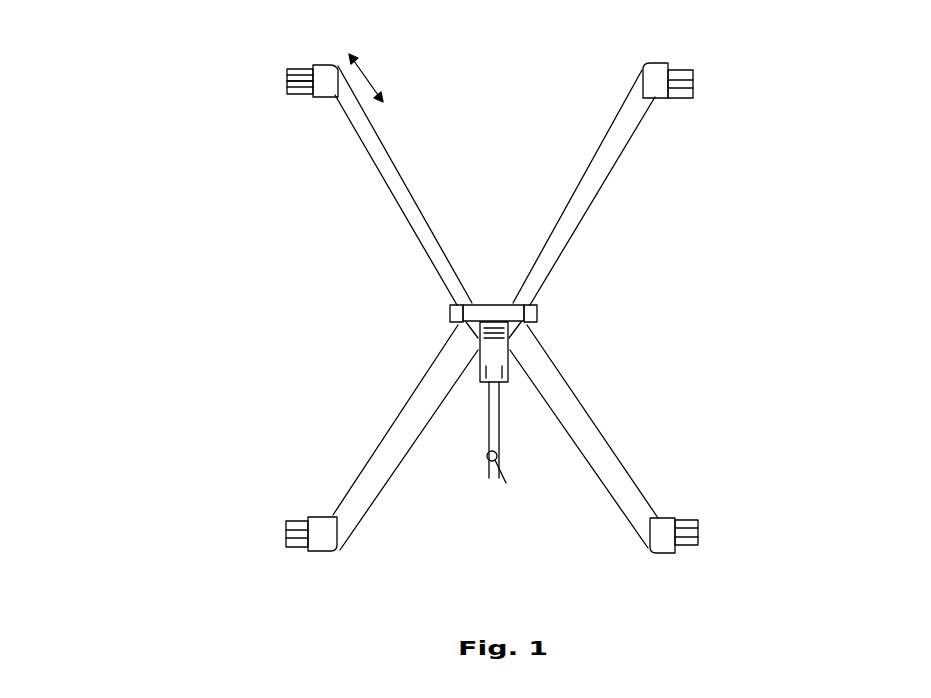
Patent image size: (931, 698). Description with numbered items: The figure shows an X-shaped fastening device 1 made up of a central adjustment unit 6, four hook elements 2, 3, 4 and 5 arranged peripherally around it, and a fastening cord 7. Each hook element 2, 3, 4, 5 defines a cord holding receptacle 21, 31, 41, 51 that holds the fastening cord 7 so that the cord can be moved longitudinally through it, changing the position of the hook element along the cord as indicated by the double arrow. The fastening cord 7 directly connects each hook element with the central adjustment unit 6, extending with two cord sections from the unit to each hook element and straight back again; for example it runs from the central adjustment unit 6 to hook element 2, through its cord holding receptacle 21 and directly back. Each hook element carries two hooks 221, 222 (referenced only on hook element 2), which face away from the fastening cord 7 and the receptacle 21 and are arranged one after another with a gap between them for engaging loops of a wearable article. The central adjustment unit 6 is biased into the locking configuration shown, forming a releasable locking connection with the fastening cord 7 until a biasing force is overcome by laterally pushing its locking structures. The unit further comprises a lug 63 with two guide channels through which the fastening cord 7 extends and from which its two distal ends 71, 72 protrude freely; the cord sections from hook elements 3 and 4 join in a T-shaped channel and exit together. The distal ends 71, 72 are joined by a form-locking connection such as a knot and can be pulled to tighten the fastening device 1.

The fastening device 1 is at (123, 231).
The hook element 2 is at (298, 158).
The cord holding receptacle 21 is at (257, 117).
The hook 221 is at (226, 69).
The hook 222 is at (218, 100).
The hook element 3 is at (342, 476).
The cord holding receptacle 31 is at (284, 499).
The hook element 4 is at (627, 484).
The cord holding receptacle 41 is at (690, 580).
The hook element 5 is at (643, 161).
The cord holding receptacle 51 is at (694, 116).
The central adjustment unit 6 is at (584, 294).
The lug 63 is at (394, 348).
The fastening cord 7 is at (563, 462).
The distal end 71 is at (432, 490).
The distal end 72 is at (535, 518).